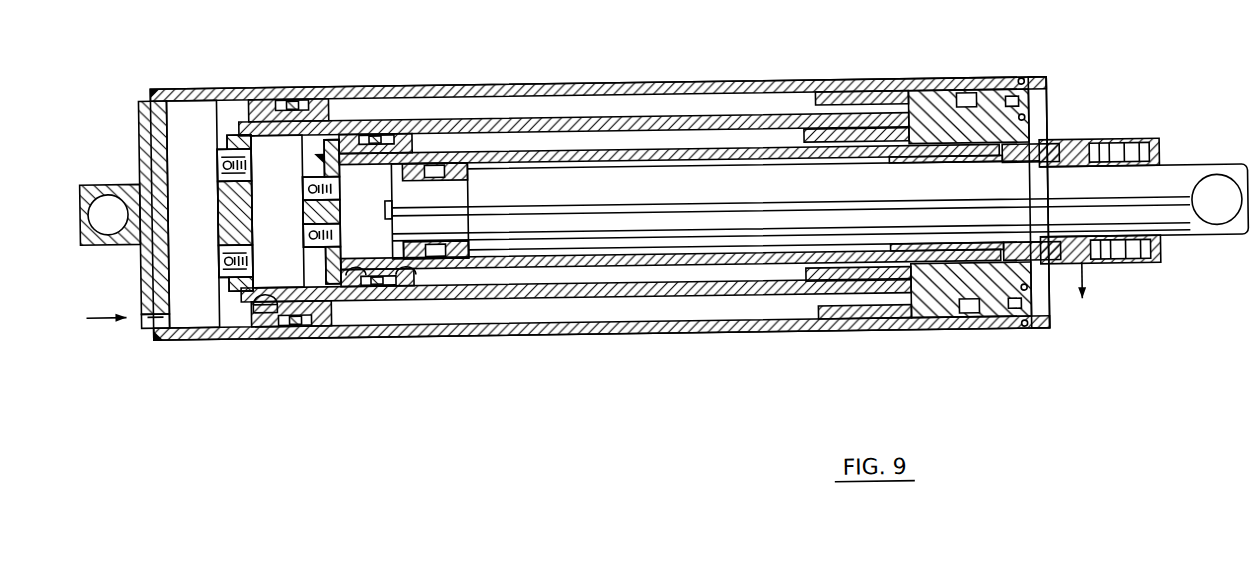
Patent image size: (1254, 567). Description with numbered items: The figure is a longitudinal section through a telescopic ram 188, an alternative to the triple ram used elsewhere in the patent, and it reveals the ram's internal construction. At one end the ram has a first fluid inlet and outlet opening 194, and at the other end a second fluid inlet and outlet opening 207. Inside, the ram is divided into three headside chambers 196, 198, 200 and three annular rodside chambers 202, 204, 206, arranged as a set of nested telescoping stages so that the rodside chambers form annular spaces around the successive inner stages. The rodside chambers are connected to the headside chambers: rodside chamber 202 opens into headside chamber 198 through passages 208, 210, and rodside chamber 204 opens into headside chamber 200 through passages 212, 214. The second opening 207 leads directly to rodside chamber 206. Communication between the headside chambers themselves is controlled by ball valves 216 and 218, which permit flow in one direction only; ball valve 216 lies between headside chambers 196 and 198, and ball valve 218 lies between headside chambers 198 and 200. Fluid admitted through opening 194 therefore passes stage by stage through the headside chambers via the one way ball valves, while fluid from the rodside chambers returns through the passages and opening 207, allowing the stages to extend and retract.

The telescopic ram 188 is at (768, 74).
The first fluid inlet and outlet opening 194 is at (141, 327).
The headside chamber 196 is at (186, 107).
The headside chamber 198 is at (271, 142).
The headside chamber 200 is at (377, 179).
The annular rodside chamber 202 is at (430, 316).
The annular rodside chamber 204 is at (548, 274).
The annular rodside chamber 206 is at (772, 252).
The second fluid inlet and outlet opening 207 is at (1089, 269).
The passage 208 is at (325, 299).
The passage 210 is at (253, 317).
The passage 212 is at (410, 265).
The passage 214 is at (386, 312).
The ball valve 216 is at (221, 142).
The ball valve 218 is at (308, 163).